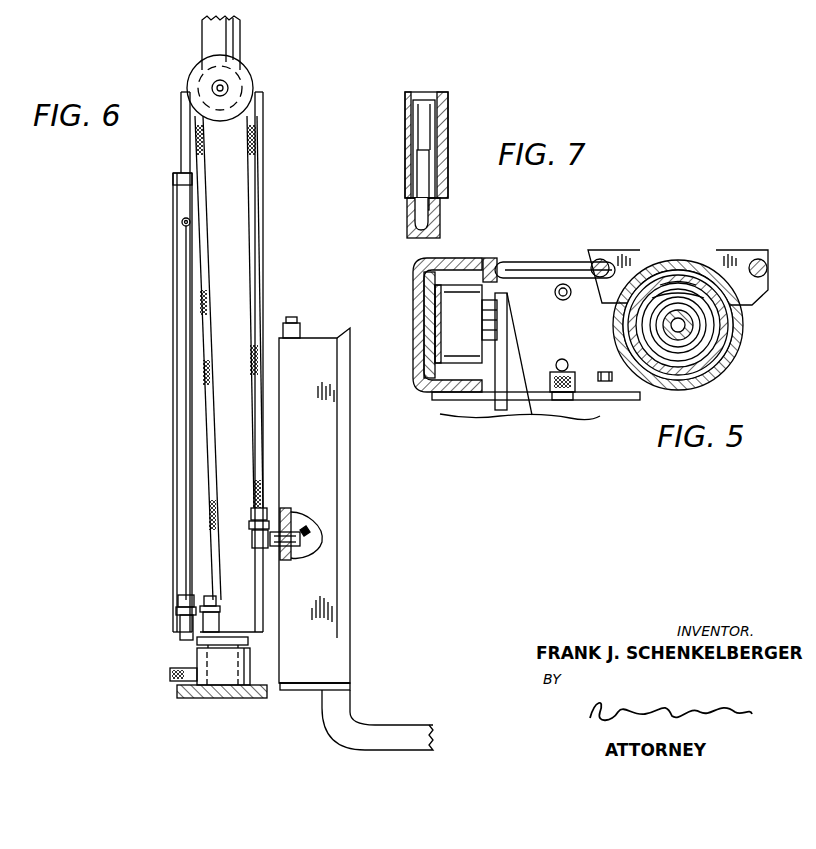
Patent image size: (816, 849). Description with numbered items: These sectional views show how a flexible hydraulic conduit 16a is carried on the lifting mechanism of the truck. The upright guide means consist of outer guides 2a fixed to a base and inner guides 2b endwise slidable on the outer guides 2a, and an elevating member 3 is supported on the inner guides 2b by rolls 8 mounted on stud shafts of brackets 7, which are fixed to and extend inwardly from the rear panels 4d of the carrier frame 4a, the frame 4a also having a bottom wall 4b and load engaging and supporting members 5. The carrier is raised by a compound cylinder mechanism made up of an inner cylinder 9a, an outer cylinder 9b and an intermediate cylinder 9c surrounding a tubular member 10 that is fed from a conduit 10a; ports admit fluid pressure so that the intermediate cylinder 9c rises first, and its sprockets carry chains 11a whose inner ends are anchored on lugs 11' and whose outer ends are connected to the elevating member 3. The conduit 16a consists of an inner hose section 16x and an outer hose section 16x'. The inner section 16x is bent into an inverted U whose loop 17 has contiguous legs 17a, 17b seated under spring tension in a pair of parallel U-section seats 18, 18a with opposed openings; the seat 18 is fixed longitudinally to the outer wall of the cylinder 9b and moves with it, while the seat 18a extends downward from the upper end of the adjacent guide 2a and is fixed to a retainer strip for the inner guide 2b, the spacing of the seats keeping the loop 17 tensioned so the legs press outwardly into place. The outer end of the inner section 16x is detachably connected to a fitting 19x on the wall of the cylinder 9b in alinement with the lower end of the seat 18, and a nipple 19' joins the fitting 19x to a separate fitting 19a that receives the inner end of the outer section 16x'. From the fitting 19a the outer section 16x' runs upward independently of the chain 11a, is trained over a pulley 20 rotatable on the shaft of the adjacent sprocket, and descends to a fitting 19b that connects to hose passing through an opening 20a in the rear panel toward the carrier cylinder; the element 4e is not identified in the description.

In FIG. 5, the outer guide 2a is at (414, 300).
In FIG. 5, the inner guide 2b is at (440, 318).
In FIG. 5, the elevating member 3 is at (638, 417).
In FIG. 6, the frame 4a is at (340, 658).
In FIG. 5, the frame 4a is at (503, 418).
In FIG. 6, the bottom wall 4b is at (295, 691).
In FIG. 6, the panel 4d is at (291, 520).
In FIG. 6, the upright casing 4e is at (350, 500).
In FIG. 6, the load engaging and supporting member 5 is at (396, 730).
In FIG. 6, the bracket 7 is at (170, 558).
In FIG. 5, the bracket 7 is at (497, 405).
In FIG. 5, the roll 8 is at (456, 342).
In FIG. 5, the inner cylinder 9a is at (706, 325).
In FIG. 6, the outer cylinder 9b is at (238, 312).
In FIG. 5, the outer cylinder 9b is at (726, 352).
In FIG. 5, the intermediate cylinder 9c is at (682, 275).
In FIG. 5, the tubular member 10 is at (692, 366).
In FIG. 6, the conduit 10a is at (176, 676).
In FIG. 5, the lug 11' is at (678, 267).
In FIG. 5, the chain 11a is at (603, 372).
In FIG. 6, the conduit 16a is at (312, 540).
In FIG. 6, the inner hose section 16x is at (156, 229).
In FIG. 6, the outer hose section 16x' is at (254, 358).
In FIG. 5, the outer hose section 16x' is at (574, 310).
In FIG. 6, the loop 17 is at (188, 221).
In FIG. 5, the loop 17 is at (556, 270).
In FIG. 6, the leg 17a is at (186, 432).
In FIG. 7, the leg 17b is at (448, 115).
In FIG. 6, the seat 18 is at (180, 196).
In FIG. 5, the seat 18a is at (491, 258).
In FIG. 6, the nipple 19' is at (226, 594).
In FIG. 6, the fitting 19a is at (214, 626).
In FIG. 6, the fitting 19b is at (256, 535).
In FIG. 6, the fitting 19x is at (180, 626).
In FIG. 7, the fitting 19x is at (440, 228).
In FIG. 6, the pulley 20 is at (240, 80).
In FIG. 6, the opening 20a is at (288, 560).